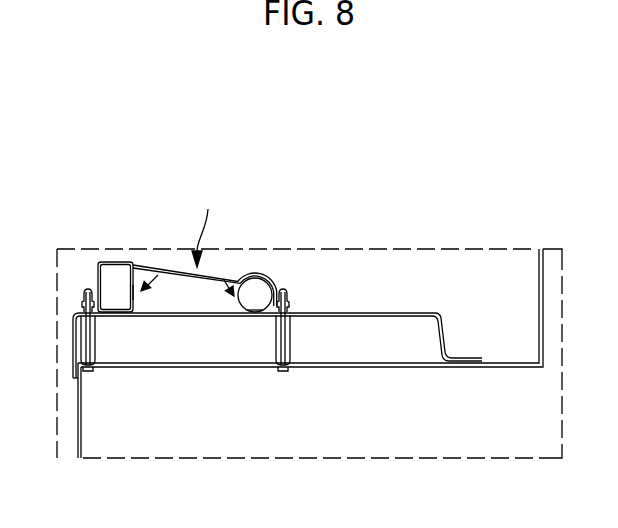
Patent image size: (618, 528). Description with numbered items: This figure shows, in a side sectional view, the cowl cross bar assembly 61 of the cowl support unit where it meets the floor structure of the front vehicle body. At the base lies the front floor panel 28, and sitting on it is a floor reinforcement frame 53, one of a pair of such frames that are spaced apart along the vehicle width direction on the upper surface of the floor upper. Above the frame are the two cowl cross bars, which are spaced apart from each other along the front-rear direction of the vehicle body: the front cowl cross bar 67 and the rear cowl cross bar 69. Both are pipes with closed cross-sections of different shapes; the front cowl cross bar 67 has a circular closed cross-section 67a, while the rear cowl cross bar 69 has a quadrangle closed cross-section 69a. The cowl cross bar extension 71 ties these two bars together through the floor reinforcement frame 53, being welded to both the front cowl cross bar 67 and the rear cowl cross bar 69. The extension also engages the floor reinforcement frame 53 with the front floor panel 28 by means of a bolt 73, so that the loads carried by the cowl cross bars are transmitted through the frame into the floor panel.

The front floor panel 28 is at (511, 368).
The floor reinforcement frame 53 is at (338, 313).
The cowl cross bar assembly 61 is at (204, 227).
The front cowl cross bar 67 is at (221, 276).
The circular closed cross-section 67a is at (248, 307).
The rear cowl cross bar 69 is at (159, 272).
The quadrangle closed cross-section 69a is at (137, 290).
The cowl cross bar extension 71 is at (142, 266).
The bolt 73 is at (87, 333).